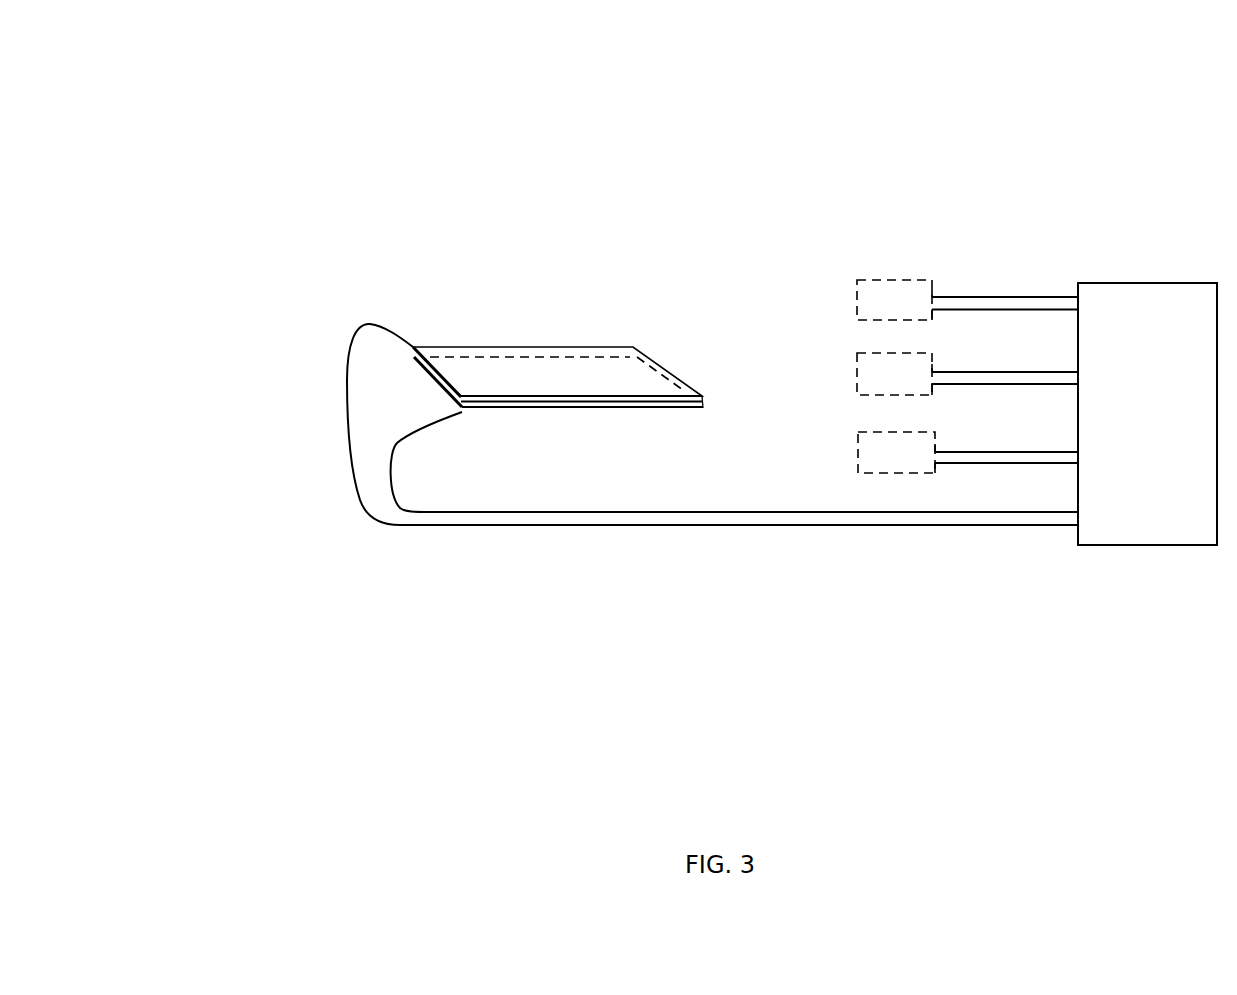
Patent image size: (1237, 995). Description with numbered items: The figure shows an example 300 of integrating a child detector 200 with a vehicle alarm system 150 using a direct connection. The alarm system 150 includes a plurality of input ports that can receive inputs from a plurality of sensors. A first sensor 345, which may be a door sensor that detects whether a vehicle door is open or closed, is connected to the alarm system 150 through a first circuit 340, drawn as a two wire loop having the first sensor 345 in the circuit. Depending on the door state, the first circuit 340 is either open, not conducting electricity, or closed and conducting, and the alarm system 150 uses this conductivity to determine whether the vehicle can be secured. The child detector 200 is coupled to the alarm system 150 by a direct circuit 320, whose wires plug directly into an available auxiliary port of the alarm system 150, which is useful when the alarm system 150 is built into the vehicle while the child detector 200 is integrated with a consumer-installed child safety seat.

The example of integrating a child detector with an alarm system 300 is at (232, 36).
The child detector 200 is at (546, 344).
The direct circuit 320 is at (737, 512).
The first sensor 345 is at (900, 278).
The first circuit 340 is at (1018, 297).
The alarm system 150 is at (1163, 282).